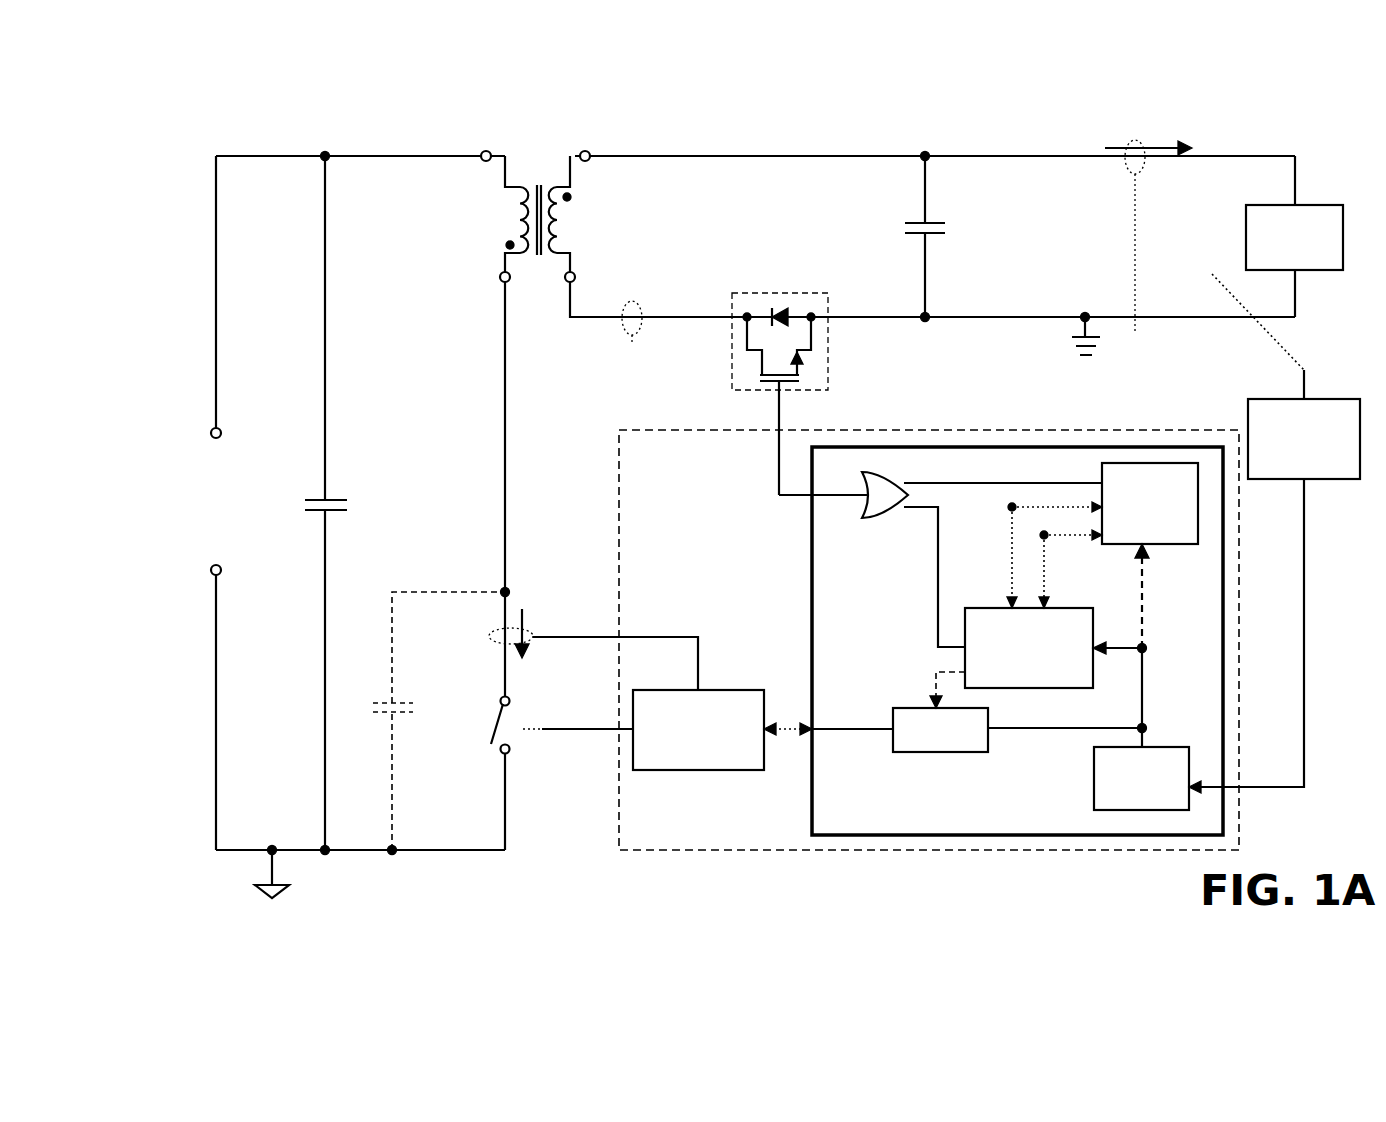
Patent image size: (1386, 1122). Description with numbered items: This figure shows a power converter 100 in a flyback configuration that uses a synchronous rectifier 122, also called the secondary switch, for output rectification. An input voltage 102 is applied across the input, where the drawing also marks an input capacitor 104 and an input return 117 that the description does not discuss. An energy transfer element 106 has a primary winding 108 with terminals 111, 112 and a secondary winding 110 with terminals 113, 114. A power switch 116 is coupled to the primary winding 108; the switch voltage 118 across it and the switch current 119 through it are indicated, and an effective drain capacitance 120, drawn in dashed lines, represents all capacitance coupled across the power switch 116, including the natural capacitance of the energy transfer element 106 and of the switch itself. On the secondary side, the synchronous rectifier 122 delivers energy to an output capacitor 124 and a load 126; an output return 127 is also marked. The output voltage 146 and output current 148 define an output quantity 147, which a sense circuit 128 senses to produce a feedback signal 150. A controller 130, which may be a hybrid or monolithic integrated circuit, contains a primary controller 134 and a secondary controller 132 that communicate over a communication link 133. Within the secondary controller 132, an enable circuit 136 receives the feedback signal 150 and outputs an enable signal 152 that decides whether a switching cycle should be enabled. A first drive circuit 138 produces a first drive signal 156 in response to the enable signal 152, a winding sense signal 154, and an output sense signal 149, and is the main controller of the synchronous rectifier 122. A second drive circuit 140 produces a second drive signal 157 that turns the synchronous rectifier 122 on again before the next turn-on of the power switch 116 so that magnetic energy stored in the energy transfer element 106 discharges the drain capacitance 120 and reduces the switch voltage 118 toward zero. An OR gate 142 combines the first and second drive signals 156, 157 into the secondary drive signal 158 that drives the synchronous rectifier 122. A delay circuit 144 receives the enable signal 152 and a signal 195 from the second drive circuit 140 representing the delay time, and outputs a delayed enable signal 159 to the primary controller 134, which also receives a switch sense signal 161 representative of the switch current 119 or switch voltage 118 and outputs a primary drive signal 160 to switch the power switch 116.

The power converter 100 is at (1276, 83).
The input voltage V_IN 102 is at (204, 489).
The input capacitor CIN 104 is at (292, 490).
The energy transfer element 106 is at (533, 182).
The primary winding 108 is at (441, 212).
The secondary winding 110 is at (606, 230).
The terminal 111 is at (482, 149).
The terminal 112 is at (501, 281).
The terminal 113 is at (584, 146).
The terminal 114 is at (578, 283).
The power switch 116 is at (510, 716).
The input return 117 is at (258, 888).
The switch voltage V_DS 118 is at (454, 691).
The switch current I_D 119 is at (559, 608).
The effective drain capacitance C_P 120 is at (360, 698).
The synchronous rectifier 122 is at (833, 357).
The output capacitor C_O 124 is at (880, 225).
The load 126 is at (1321, 202).
The output return 127 is at (1068, 343).
The sense circuit 128 is at (1339, 399).
The controller 130 is at (753, 852).
The secondary controller 132 is at (962, 838).
The communication link 133 is at (786, 738).
The primary controller 134 is at (697, 774).
The enable circuit 136 is at (1093, 771).
The first drive circuit 138 is at (1170, 548).
The second drive circuit 140 is at (1093, 688).
The OR gate 142 is at (872, 524).
The delay circuit 144 is at (954, 758).
The output voltage V_O 146 is at (1010, 229).
The output quantity U_O 147 is at (1189, 233).
The output current I_O 148 is at (1108, 116).
The output sense signal 149 is at (1175, 368).
The feedback signal U_FB 150 is at (1334, 614).
The enable signal U_EN 152 is at (1172, 713).
The winding sense signal 154 is at (607, 406).
The first drive signal U1 156 is at (962, 447).
The second drive signal U2 157 is at (900, 596).
The secondary drive signal U_SR 158 is at (752, 482).
The delayed enable signal U_EN_D 159 is at (848, 696).
The primary drive signal U_DR 160 is at (571, 746).
The switch sense signal 161 is at (718, 613).
The signal 195 is at (924, 688).